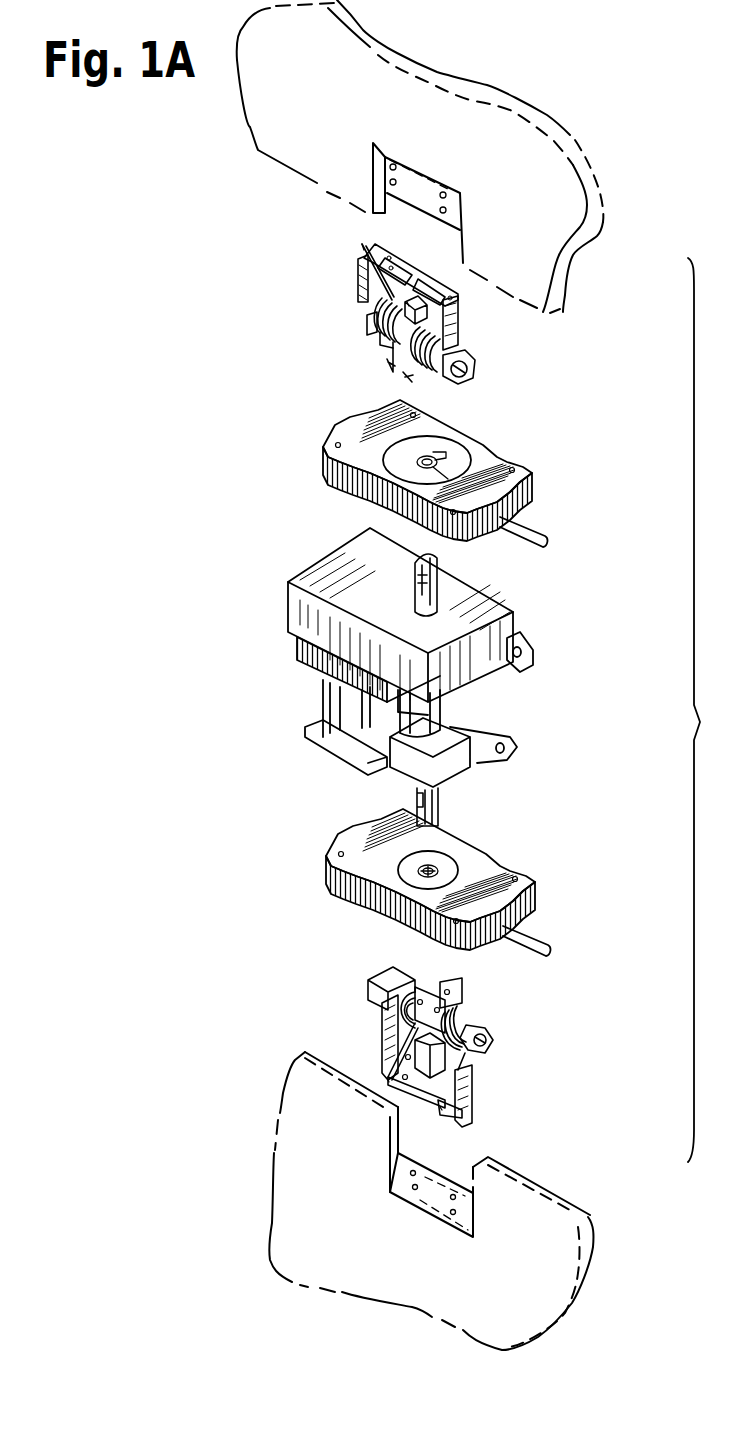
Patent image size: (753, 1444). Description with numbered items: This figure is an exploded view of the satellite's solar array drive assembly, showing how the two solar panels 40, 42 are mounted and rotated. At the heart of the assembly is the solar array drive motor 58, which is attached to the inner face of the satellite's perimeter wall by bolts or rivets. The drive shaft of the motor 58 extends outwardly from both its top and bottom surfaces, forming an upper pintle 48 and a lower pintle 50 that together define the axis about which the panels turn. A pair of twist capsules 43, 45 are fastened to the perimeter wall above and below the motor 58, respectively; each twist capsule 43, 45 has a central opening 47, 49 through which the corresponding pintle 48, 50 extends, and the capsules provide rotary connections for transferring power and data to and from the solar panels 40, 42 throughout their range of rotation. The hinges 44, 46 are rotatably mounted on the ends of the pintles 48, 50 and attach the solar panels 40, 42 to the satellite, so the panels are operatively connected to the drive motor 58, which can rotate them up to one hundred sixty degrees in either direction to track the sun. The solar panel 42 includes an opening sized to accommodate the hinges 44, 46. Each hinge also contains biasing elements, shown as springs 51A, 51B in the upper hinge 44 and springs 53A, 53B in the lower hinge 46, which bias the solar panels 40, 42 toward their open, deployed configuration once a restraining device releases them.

The solar panel 40 is at (532, 1233).
The solar panel 42 is at (545, 182).
The twist capsule 43 is at (533, 483).
The hinge 44 is at (453, 322).
The twist capsule 45 is at (510, 878).
The hinge 46 is at (473, 1077).
The central opening 47 is at (427, 455).
The pintle 48 is at (457, 580).
The central opening 49 is at (432, 869).
The pintle 50 is at (440, 817).
The spring 51A is at (362, 245).
The spring 51B is at (407, 302).
The spring 53A is at (387, 1078).
The spring 53B is at (440, 1107).
The solar array drive motor 58 is at (477, 597).